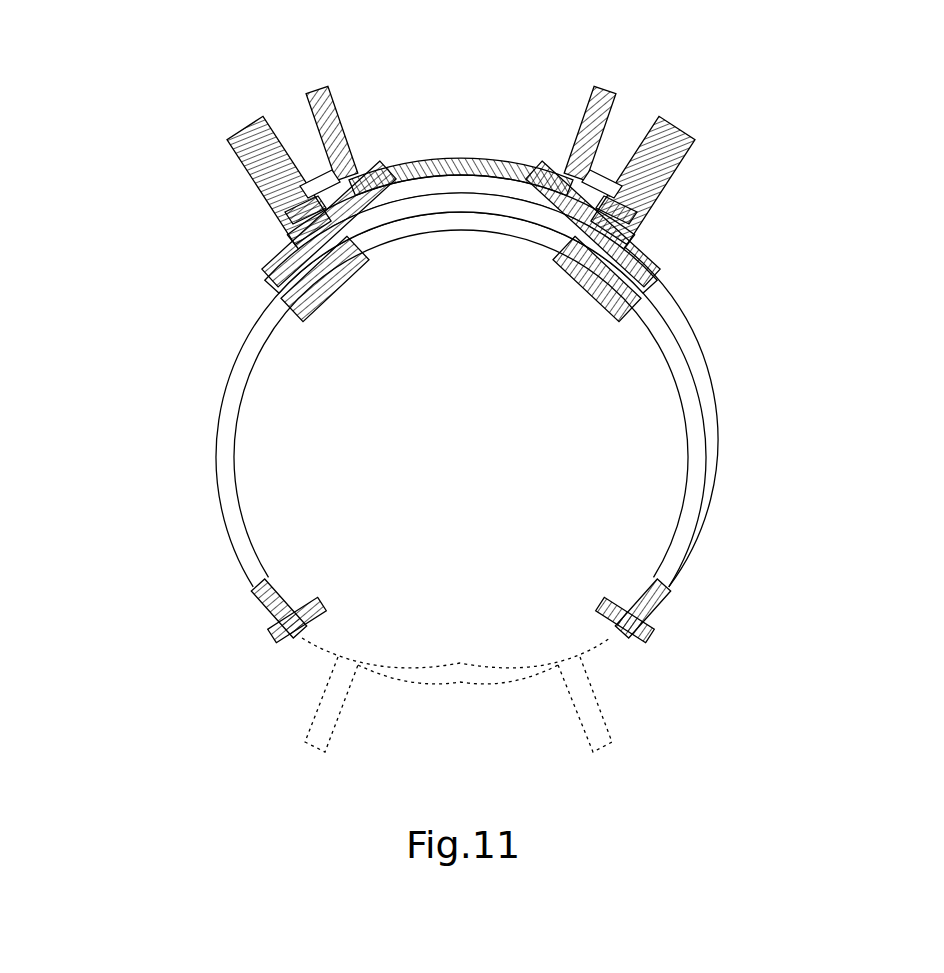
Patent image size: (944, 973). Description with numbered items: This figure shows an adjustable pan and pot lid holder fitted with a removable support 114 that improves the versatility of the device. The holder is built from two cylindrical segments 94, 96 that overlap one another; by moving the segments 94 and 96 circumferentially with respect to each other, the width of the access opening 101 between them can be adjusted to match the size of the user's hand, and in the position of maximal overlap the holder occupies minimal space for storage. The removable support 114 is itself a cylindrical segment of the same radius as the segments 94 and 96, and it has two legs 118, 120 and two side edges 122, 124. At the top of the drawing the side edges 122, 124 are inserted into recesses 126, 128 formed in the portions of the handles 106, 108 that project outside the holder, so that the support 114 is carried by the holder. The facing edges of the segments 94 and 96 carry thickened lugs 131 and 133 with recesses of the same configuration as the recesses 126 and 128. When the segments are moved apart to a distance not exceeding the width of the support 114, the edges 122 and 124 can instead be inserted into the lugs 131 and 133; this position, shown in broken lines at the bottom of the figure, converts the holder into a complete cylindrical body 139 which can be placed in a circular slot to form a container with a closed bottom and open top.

The cylindrical segment 94 is at (236, 364).
The cylindrical segment 96 is at (708, 412).
The access opening 101 is at (418, 636).
The handle 106 is at (200, 156).
The handle 108 is at (688, 158).
The removable support 114 is at (465, 128).
The leg 118 is at (334, 114).
The leg 120 is at (607, 112).
The side edge 122 is at (300, 208).
The side edge 124 is at (626, 210).
The recess 126 is at (610, 194).
The recess 128 is at (318, 189).
The thickened lug 131 is at (256, 668).
The thickened lug 133 is at (634, 674).
The complete cylindrical body 139 is at (726, 573).